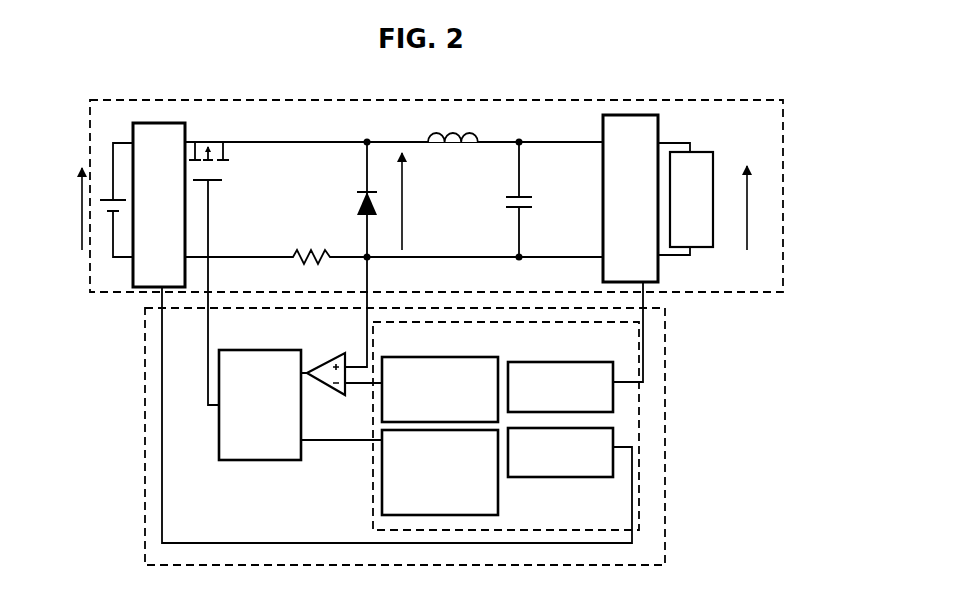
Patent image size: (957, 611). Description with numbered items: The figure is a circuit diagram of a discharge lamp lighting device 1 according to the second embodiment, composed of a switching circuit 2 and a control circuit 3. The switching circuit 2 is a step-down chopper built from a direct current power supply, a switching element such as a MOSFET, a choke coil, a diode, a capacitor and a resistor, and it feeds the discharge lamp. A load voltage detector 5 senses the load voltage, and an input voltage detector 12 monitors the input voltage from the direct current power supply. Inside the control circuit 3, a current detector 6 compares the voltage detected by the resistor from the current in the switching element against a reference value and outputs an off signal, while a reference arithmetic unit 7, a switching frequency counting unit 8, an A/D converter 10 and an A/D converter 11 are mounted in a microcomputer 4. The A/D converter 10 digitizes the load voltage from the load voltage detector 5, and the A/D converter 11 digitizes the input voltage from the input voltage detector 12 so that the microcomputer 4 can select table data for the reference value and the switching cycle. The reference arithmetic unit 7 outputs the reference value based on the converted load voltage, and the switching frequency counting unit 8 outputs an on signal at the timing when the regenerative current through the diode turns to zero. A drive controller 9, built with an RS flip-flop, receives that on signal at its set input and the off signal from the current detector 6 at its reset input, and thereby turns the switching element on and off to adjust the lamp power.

The discharge lamp lighting device 1 is at (716, 331).
The switching circuit 2 is at (742, 100).
The control circuit 3 is at (145, 437).
The microcomputer 4 is at (373, 470).
The load voltage detector 5 is at (660, 128).
The current detector 6 is at (329, 392).
The reference arithmetic unit 7 is at (435, 357).
The switching frequency counting unit 8 is at (500, 495).
The drive controller 9 is at (219, 440).
The A/D converter 10 is at (555, 362).
The A/D converter 11 is at (605, 478).
The input voltage detector 12 is at (188, 130).